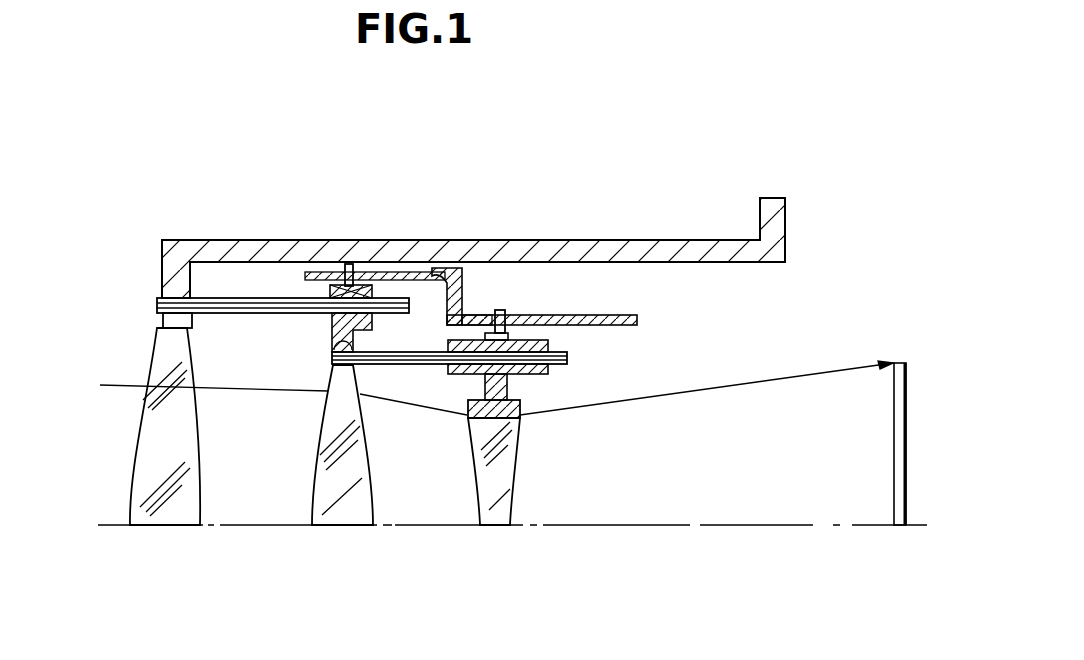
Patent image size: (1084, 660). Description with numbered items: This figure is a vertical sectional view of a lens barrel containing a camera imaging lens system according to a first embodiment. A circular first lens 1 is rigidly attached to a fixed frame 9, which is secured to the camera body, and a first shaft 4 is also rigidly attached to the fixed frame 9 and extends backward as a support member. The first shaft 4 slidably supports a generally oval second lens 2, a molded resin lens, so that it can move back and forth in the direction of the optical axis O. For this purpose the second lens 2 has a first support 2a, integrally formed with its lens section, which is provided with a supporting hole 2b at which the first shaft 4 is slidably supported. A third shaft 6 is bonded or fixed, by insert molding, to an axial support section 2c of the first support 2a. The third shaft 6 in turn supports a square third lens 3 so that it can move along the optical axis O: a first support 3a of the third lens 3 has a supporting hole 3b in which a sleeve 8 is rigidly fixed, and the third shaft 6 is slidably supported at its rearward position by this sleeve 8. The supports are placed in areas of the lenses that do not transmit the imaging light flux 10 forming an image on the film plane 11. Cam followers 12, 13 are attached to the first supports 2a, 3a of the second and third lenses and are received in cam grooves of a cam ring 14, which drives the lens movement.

The first lens 1 is at (186, 502).
The second lens 2 is at (358, 497).
The third lens 3 is at (507, 495).
The first support 2a is at (374, 272).
The supporting hole 2b is at (330, 292).
The axial support section 2c is at (338, 342).
The first support 3a is at (508, 388).
The supporting hole 3b is at (479, 313).
The first shaft 4 is at (222, 297).
The third shaft 6 is at (423, 350).
The sleeve 8 is at (540, 341).
The fixed frame 9 is at (408, 240).
The imaging light flux 10 is at (110, 387).
The film plane 11 is at (908, 393).
The cam follower 12 is at (350, 264).
The cam follower 13 is at (500, 310).
The cam ring 14 is at (612, 315).
The optical axis O is at (770, 530).